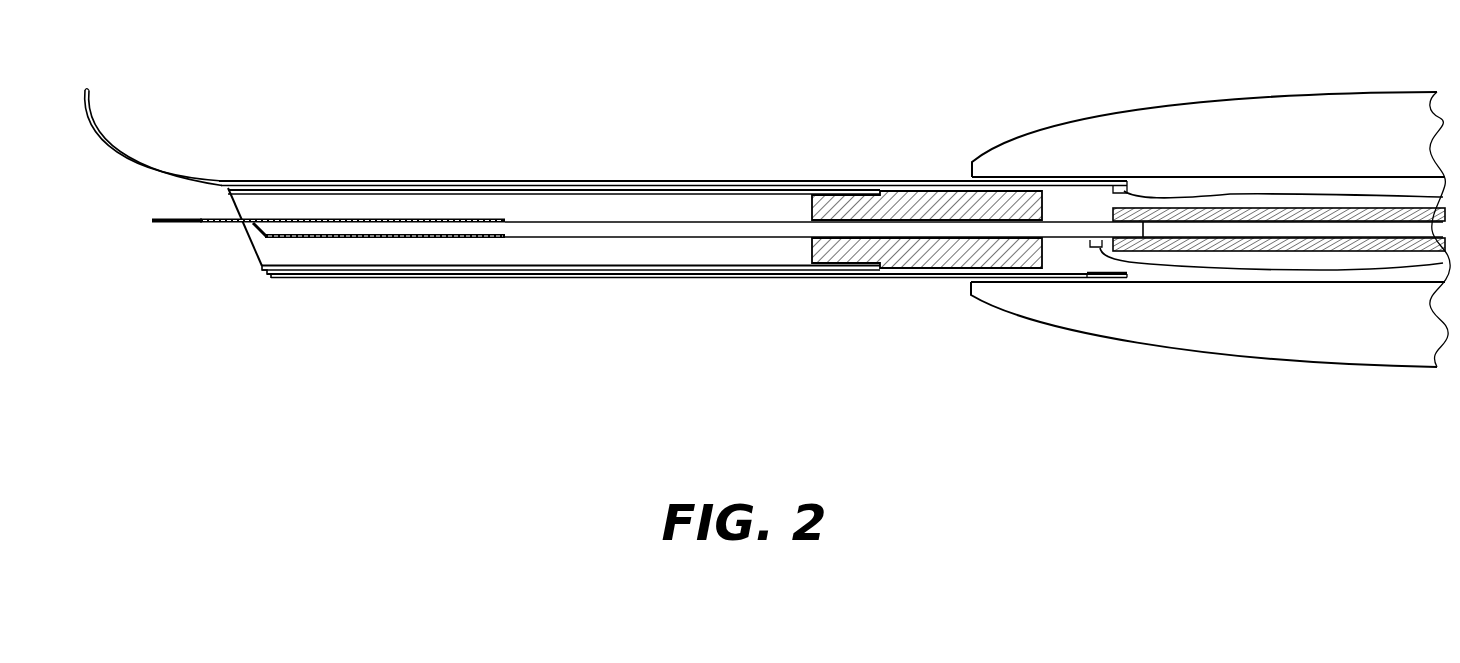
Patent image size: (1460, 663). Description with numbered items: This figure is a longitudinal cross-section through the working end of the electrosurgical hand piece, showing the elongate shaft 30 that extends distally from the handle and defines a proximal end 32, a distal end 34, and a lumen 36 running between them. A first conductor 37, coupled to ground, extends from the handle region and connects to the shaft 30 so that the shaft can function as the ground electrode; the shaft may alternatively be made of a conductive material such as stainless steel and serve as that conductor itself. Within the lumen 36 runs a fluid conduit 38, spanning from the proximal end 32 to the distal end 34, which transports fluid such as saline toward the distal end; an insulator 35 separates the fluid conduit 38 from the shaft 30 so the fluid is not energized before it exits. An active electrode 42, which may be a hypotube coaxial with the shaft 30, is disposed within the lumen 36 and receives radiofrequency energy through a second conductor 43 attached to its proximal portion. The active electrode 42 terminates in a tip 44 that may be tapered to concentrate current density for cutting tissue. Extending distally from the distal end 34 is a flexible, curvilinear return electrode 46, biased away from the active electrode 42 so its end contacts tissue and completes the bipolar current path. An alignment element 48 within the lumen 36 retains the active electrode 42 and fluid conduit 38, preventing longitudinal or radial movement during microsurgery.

The elongate shaft 30 is at (700, 280).
The proximal end 32 is at (1087, 273).
The distal end 34 is at (310, 278).
The insulator 35 is at (445, 191).
The lumen 36 is at (590, 280).
The first conductor 37 is at (1269, 192).
The fluid conduit 38 is at (711, 222).
The active electrode 42 is at (200, 223).
The second conductor 43 is at (1393, 270).
The tip 44 is at (150, 224).
The return electrode 46 is at (142, 162).
The alignment element 48 is at (940, 254).